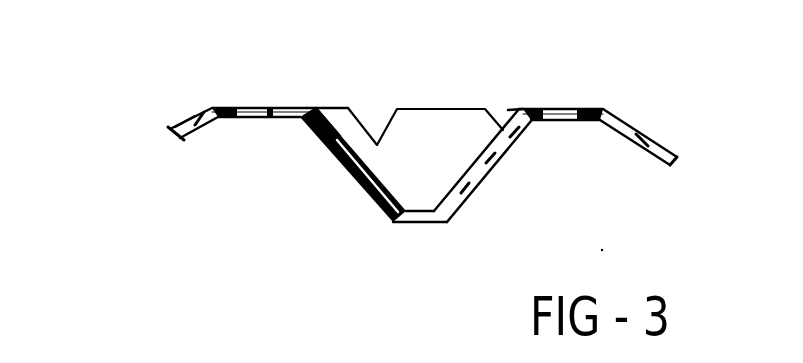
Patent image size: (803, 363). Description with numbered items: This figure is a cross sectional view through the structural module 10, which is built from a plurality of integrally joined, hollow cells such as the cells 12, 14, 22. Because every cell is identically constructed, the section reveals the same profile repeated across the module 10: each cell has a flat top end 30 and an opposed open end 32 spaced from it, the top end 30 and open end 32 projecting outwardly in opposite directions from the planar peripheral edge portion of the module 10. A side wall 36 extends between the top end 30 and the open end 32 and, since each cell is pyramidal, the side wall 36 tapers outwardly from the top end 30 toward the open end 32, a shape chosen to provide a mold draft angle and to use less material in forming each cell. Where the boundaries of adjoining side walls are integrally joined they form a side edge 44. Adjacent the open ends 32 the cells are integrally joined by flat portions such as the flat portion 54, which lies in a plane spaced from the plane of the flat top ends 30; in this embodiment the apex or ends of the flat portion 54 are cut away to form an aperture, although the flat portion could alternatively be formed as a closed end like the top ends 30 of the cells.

The structural module 10 is at (309, 87).
The cell 12 is at (226, 97).
The cell 14 is at (447, 108).
The cell 22 is at (670, 96).
The flat top end 30 is at (240, 108).
The open end 32 is at (283, 155).
The side wall 36 is at (339, 142).
The side edge 44 is at (188, 114).
The flat portion 54 is at (424, 224).